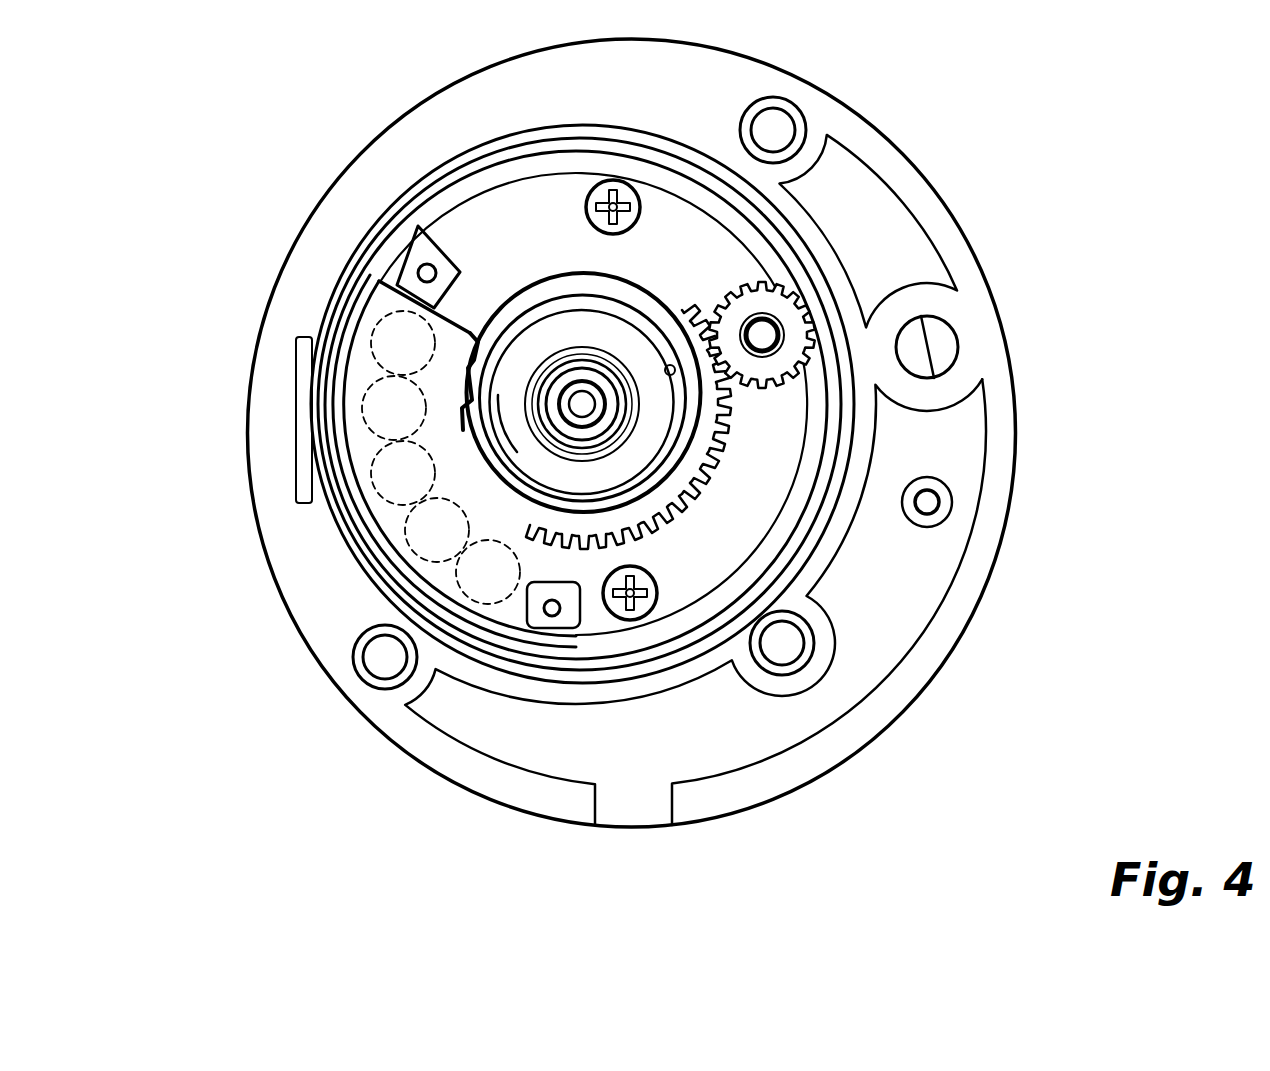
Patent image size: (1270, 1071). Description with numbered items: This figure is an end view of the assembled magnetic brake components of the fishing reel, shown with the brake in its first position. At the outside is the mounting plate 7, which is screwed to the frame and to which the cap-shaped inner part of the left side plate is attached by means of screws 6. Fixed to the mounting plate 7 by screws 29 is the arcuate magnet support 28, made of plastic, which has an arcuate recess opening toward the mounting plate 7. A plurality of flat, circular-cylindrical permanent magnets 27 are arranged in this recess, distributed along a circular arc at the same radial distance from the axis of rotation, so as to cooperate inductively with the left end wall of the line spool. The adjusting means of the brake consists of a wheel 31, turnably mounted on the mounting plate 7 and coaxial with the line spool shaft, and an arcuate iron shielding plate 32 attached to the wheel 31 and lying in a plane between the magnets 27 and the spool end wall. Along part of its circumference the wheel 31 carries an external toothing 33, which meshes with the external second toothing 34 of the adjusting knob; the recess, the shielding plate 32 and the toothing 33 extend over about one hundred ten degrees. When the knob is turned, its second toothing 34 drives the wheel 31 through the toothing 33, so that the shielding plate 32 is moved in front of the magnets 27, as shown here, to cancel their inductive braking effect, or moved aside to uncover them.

The screws 6 is at (622, 186).
The mounting plate 7 is at (1000, 440).
The permanent magnets 27 is at (440, 532).
The magnet support 28 is at (362, 318).
The screws 29 is at (430, 273).
The wheel 31 is at (593, 288).
The shielding plate 32 is at (450, 342).
The external toothing 33 is at (705, 480).
The second toothing 34 is at (760, 292).